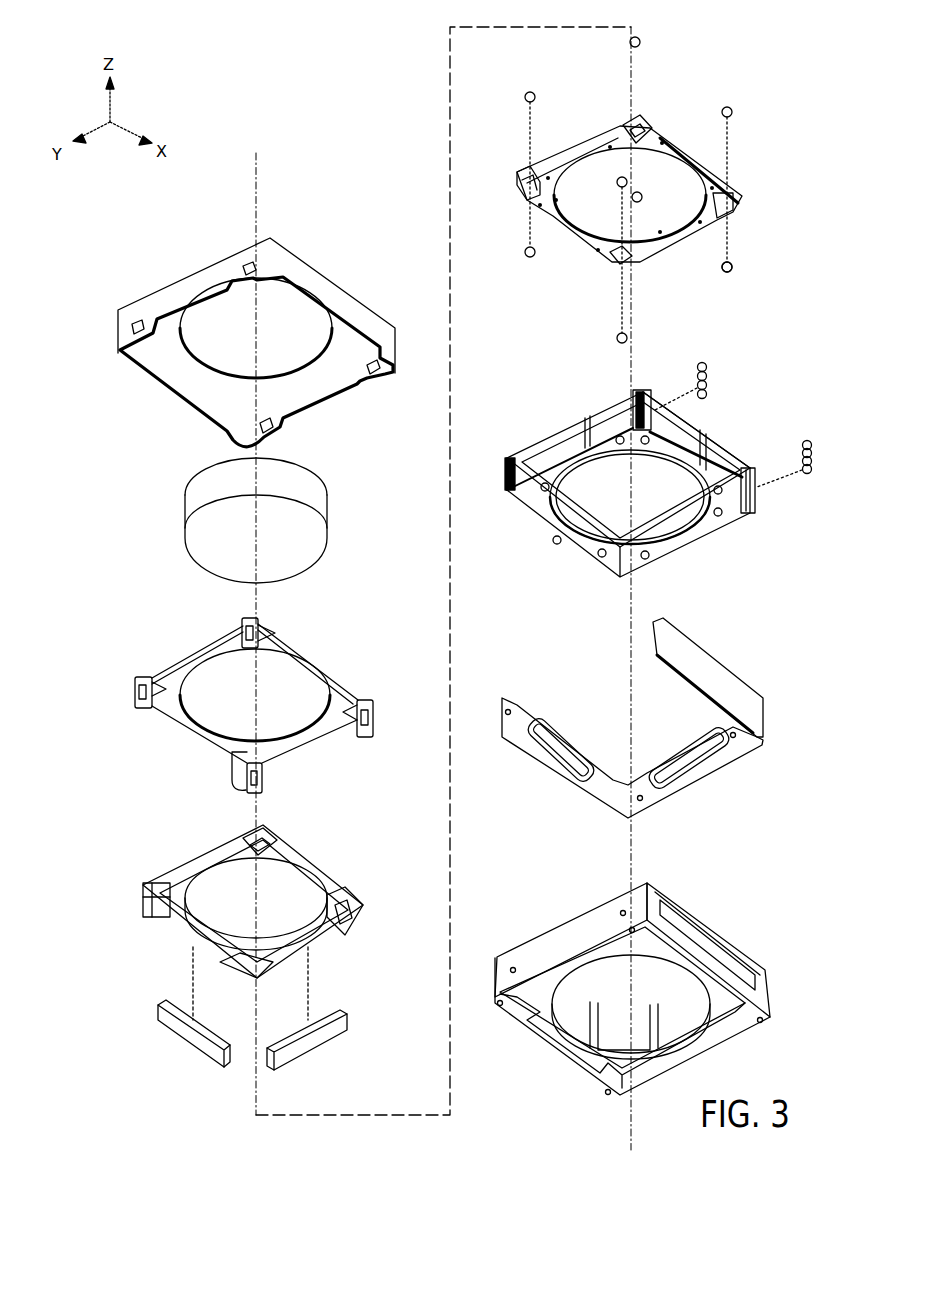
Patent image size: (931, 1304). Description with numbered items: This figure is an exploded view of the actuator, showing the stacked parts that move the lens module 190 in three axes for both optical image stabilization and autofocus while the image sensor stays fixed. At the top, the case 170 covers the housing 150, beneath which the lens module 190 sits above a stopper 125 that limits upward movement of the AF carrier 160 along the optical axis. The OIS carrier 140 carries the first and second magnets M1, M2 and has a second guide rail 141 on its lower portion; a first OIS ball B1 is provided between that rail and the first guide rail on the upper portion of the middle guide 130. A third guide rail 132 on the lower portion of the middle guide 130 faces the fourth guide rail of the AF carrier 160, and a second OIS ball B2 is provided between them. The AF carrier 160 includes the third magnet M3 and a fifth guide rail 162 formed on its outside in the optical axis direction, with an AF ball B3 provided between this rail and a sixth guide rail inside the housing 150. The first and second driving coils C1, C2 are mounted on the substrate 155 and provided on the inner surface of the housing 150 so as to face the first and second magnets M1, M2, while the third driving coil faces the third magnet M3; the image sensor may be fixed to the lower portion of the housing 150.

The case 170 is at (305, 262).
The lens module 190 is at (314, 490).
The stopper 125 is at (305, 640).
The OIS carrier 140 is at (231, 897).
The second guide rail 141 is at (143, 898).
The first magnet M1 is at (318, 1053).
The second magnet M2 is at (180, 1043).
The first OIS ball B1 is at (641, 42).
The second OIS ball B2 is at (733, 267).
The AF ball B3 is at (810, 443).
The middle guide 130 is at (609, 208).
The third guide rail 132 is at (522, 192).
The AF carrier 160 is at (672, 487).
The fifth guide rail 162 is at (760, 493).
The third magnet M3 is at (717, 457).
The substrate 155 is at (637, 738).
The first driving coil C1 is at (685, 782).
The second driving coil C2 is at (553, 725).
The housing 150 is at (740, 952).